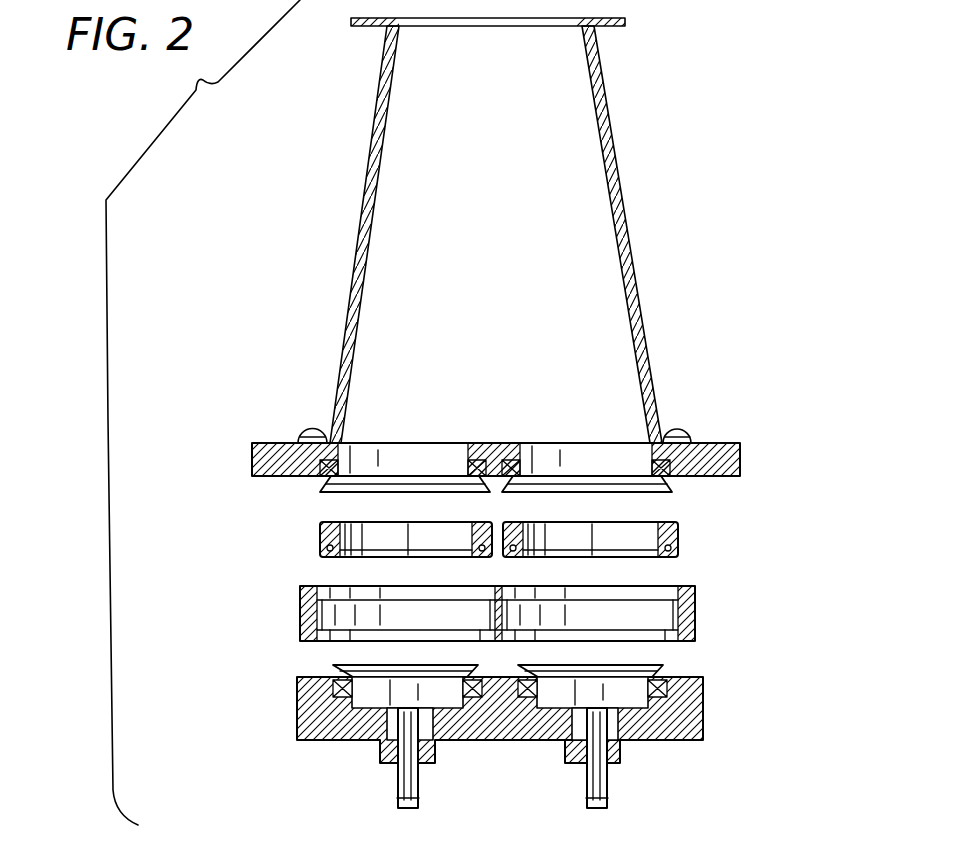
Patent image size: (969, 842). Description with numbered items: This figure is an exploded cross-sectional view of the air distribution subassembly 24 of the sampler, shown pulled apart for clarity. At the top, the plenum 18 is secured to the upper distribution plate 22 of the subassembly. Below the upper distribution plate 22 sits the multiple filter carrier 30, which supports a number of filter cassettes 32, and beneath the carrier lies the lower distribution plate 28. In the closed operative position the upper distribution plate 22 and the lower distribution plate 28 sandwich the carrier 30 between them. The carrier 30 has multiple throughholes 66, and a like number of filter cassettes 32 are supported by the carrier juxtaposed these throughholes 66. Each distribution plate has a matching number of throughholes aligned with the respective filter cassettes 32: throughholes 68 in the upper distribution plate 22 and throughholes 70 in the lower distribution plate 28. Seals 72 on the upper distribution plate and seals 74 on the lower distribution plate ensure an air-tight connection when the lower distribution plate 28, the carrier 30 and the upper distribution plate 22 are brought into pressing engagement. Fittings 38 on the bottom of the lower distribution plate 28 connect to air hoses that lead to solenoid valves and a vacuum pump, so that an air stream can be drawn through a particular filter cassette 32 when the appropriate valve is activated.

The plenum 18 is at (638, 288).
The upper distribution plate 22 is at (728, 441).
The air distribution subassembly 24 is at (266, 297).
The lower distribution plate 28 is at (686, 746).
The multiple filter carrier 30 is at (697, 612).
The filter cassette 32 is at (692, 535).
The fitting 38 is at (622, 752).
The throughhole 66 is at (356, 610).
The throughhole 68 is at (598, 455).
The throughhole 70 is at (377, 688).
The seal 72 is at (672, 474).
The seal 74 is at (669, 676).